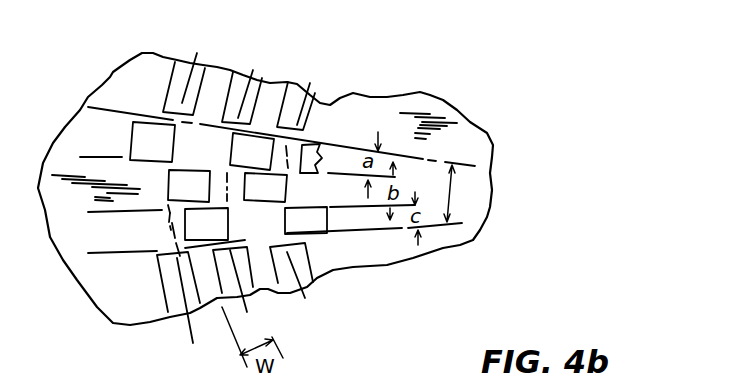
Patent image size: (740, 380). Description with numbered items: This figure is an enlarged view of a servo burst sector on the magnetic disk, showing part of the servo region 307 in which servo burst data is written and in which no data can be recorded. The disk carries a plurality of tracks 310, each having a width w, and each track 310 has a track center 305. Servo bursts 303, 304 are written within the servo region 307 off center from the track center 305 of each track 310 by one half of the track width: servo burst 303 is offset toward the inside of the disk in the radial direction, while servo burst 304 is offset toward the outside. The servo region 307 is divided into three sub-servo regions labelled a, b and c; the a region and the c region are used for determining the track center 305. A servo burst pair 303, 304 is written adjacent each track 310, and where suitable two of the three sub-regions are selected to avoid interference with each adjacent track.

The servo burst 303 is at (273, 150).
The servo burst 304 is at (180, 227).
The track center 305 is at (253, 70).
The servo region 307 is at (447, 190).
The track 310 is at (167, 283).